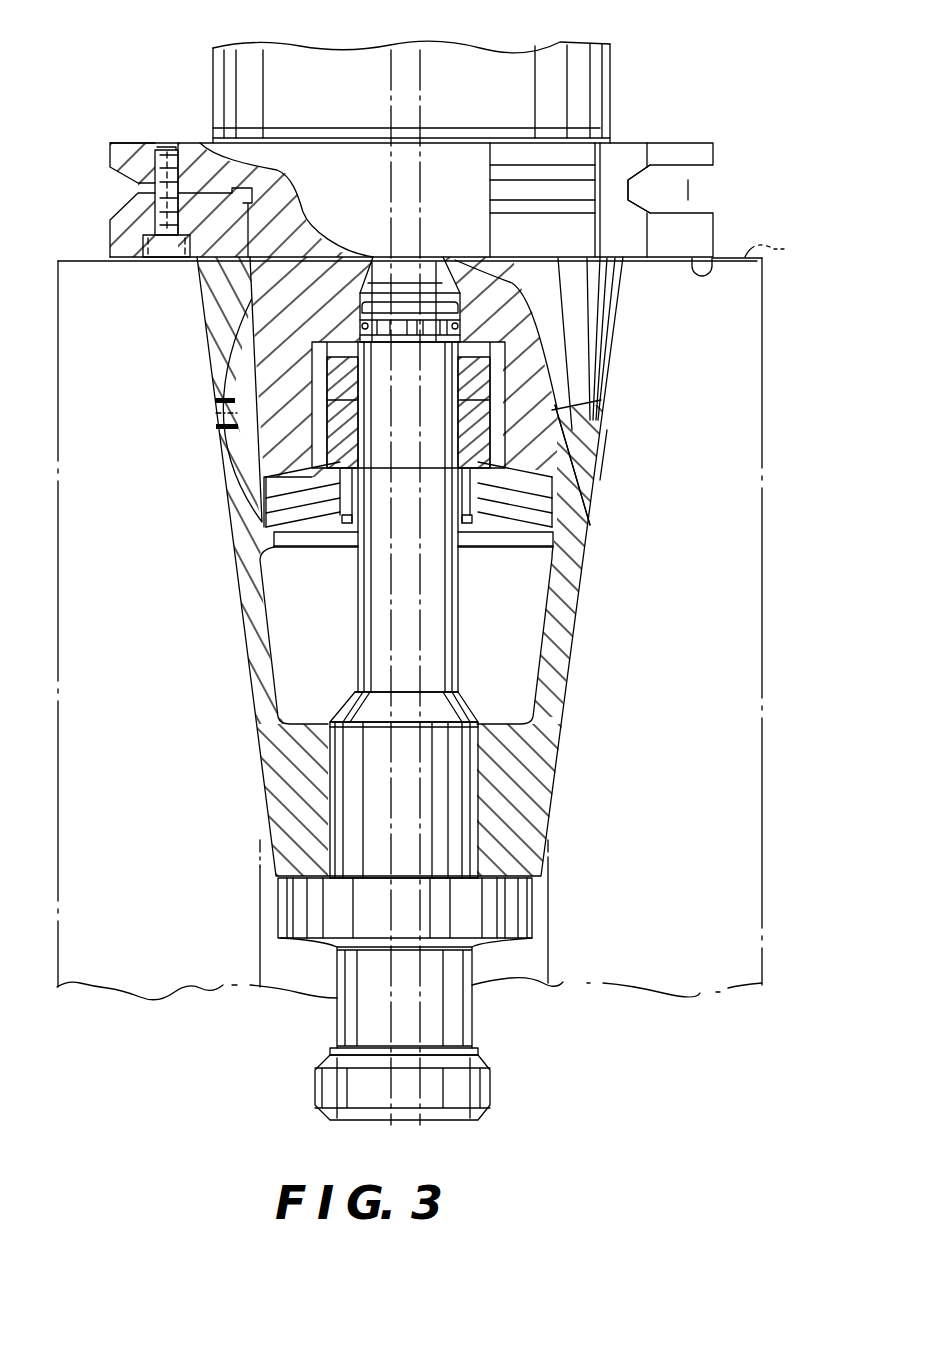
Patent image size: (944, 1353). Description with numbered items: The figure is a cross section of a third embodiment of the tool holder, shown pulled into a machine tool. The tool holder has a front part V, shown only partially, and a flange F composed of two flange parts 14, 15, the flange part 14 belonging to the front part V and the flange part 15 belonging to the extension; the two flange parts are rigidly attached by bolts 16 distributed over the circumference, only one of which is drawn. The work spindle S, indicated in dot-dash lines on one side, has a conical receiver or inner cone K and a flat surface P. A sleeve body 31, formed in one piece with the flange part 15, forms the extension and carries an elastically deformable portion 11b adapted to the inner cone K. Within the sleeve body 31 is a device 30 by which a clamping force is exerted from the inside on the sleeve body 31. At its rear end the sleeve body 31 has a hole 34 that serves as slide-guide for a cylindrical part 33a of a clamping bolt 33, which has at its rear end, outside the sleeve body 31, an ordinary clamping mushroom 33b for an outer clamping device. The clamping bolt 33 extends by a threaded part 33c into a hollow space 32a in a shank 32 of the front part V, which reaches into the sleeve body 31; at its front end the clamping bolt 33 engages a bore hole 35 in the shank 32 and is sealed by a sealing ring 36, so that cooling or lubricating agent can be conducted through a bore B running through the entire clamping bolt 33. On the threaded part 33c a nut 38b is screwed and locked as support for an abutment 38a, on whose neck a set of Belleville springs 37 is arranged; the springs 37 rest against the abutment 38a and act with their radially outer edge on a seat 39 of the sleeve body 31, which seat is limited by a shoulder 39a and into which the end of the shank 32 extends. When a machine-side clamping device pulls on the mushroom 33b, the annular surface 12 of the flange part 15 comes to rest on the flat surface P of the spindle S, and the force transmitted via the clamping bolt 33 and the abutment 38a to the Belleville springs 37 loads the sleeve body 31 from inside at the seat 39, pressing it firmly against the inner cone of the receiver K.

The front part V is at (490, 76).
The work spindle S is at (58, 284).
The flat surface P is at (760, 254).
The flange F is at (726, 157).
The annular surface 12 is at (717, 257).
The flange part 14 is at (120, 143).
The flange part 15 is at (127, 227).
The bolt 16 is at (168, 148).
The elastically deformable portion 11b is at (614, 506).
The device 30 is at (310, 576).
The sleeve body 31 is at (262, 663).
The shank 32 is at (280, 305).
The hollow space 32a is at (228, 398).
The conical receiver K is at (222, 462).
The bore B is at (395, 668).
The clamping bolt 33 is at (447, 600).
The cylindrical part 33a is at (460, 793).
The clamping mushroom 33b is at (447, 1005).
The threaded part 33c is at (412, 365).
The hole 34 is at (330, 793).
The bore hole 35 is at (462, 297).
The sealing ring 36 is at (445, 325).
The set of Belleville springs 37 is at (552, 525).
The abutment 38a is at (507, 462).
The nut 38b is at (412, 417).
The seat 39 is at (258, 510).
The shoulder 39a is at (250, 558).